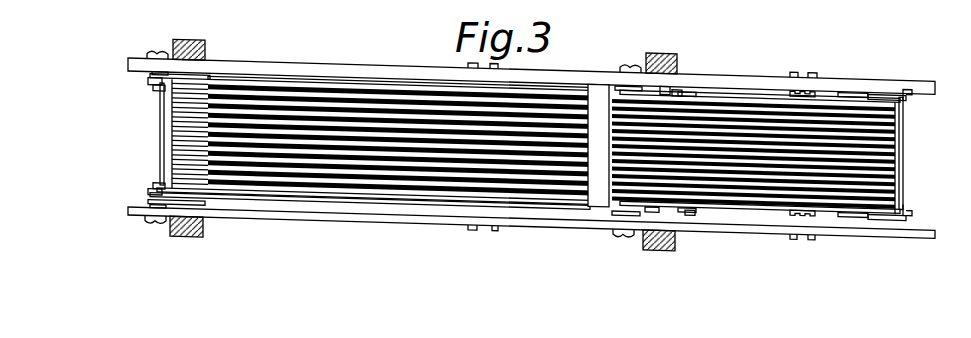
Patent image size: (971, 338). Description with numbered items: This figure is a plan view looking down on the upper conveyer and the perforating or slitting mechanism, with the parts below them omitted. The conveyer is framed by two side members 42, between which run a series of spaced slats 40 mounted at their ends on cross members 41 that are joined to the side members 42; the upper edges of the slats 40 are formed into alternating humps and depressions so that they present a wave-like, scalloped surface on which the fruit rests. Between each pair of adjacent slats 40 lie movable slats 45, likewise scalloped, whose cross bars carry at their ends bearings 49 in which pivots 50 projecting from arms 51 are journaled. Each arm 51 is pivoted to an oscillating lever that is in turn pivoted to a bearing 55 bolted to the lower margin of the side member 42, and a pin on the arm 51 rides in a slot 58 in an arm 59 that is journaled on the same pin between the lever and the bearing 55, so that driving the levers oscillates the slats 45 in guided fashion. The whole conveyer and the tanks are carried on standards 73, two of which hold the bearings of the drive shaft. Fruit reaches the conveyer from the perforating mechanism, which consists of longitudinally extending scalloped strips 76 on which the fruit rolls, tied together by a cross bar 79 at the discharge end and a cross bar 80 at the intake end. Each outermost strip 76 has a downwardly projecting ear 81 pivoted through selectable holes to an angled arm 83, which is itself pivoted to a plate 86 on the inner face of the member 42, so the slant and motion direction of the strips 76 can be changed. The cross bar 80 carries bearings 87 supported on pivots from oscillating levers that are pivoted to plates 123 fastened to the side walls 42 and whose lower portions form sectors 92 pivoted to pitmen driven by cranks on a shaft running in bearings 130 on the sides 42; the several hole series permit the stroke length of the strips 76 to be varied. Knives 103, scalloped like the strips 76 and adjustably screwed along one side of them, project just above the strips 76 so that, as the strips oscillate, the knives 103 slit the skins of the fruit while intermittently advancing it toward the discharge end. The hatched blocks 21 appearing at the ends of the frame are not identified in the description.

The insulating block 21 is at (190, 40).
The slats or strips 40 is at (178, 137).
The cross members 41 is at (218, 75).
The side members 42 is at (346, 68).
The movable slats or strips 45 is at (182, 153).
The bearings 49 is at (155, 90).
The pivots 50 is at (162, 92).
The arms 51 is at (150, 83).
The bearings 55 is at (163, 50).
The slot 58 is at (160, 73).
The arm 59 is at (150, 75).
The standards 73 is at (661, 54).
The strips 76 is at (837, 113).
The cross bar 79 is at (597, 100).
The cross bar 80 is at (903, 127).
The ear 81 is at (667, 89).
The arms 83 is at (678, 89).
The plates 86 is at (688, 86).
The bearings 87 is at (912, 101).
The sectors 92 is at (850, 95).
The knives 103 is at (752, 113).
The plates 123 is at (883, 93).
The bearings 130 is at (803, 96).